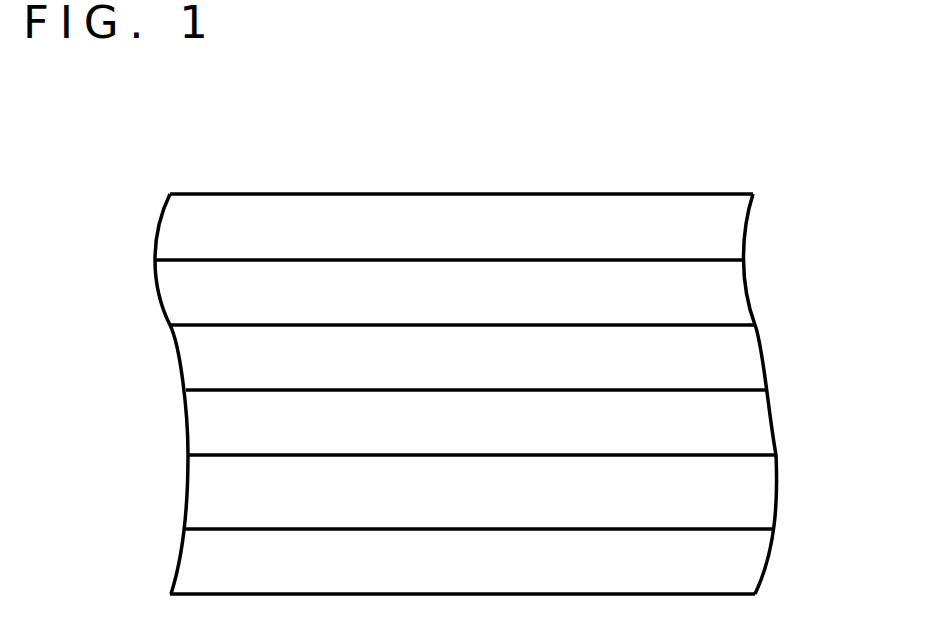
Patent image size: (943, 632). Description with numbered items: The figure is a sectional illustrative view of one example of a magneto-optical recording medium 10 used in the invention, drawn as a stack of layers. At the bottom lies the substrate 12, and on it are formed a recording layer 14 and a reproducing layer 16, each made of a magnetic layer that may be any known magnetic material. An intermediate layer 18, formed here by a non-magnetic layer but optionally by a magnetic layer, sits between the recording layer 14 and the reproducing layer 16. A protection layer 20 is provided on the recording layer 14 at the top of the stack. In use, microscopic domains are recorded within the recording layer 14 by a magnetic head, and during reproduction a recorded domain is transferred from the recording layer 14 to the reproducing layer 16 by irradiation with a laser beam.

The magneto-optical recording medium 10 is at (102, 155).
The substrate 12 is at (723, 580).
The recording layer 14 is at (728, 297).
The reproducing layer 16 is at (750, 423).
The intermediate layer 18 is at (742, 358).
The protection layer 20 is at (728, 232).